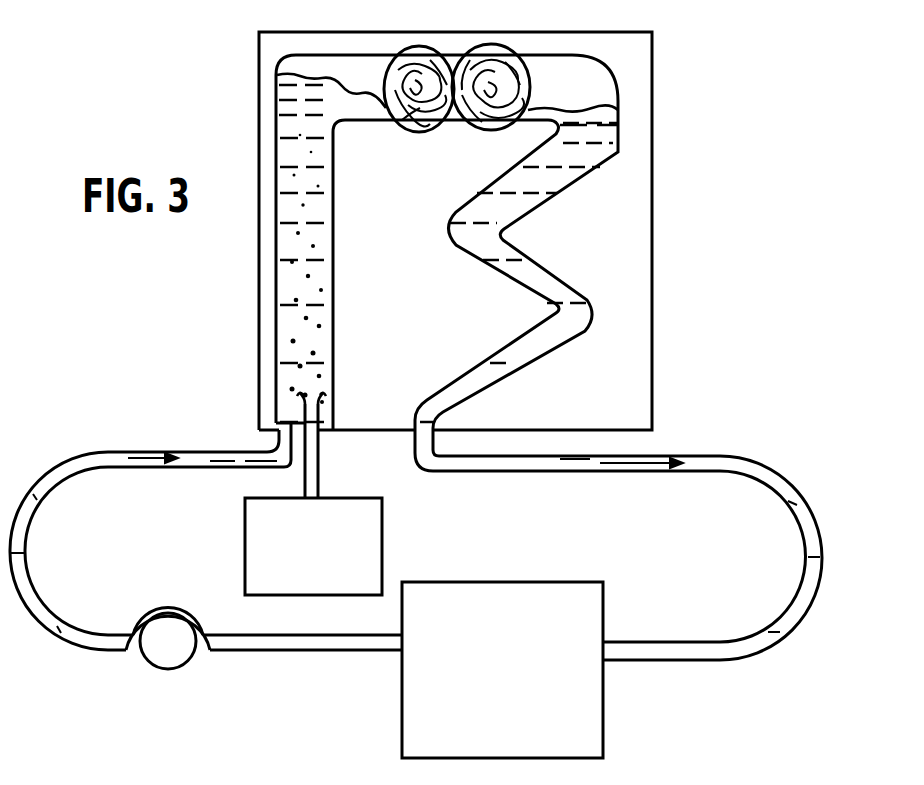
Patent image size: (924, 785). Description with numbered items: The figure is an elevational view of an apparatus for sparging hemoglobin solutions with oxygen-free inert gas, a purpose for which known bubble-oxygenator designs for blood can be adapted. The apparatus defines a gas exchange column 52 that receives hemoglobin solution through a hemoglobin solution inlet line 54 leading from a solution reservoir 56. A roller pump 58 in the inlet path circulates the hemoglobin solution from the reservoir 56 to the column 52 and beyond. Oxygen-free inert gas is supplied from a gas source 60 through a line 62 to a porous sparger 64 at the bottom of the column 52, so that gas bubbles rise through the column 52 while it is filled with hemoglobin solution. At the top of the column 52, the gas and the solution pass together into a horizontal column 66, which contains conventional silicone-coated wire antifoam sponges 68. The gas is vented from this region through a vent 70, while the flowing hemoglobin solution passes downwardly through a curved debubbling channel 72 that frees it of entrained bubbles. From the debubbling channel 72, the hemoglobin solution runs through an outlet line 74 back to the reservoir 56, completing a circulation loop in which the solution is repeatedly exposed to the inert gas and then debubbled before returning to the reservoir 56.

The gas exchange column 52 is at (278, 332).
The hemoglobin solution inlet line 54 is at (27, 562).
The solution reservoir 56 is at (514, 681).
The roller pump 58 is at (174, 661).
The gas source 60 is at (327, 548).
The line 62 is at (320, 468).
The porous sparger 64 is at (318, 394).
The horizontal column 66 is at (361, 64).
The silicone-coated wire antifoam sponges 68 is at (428, 113).
The vent 70 is at (502, 45).
The curved debubbling channel 72 is at (573, 290).
The outlet line 74 is at (770, 643).